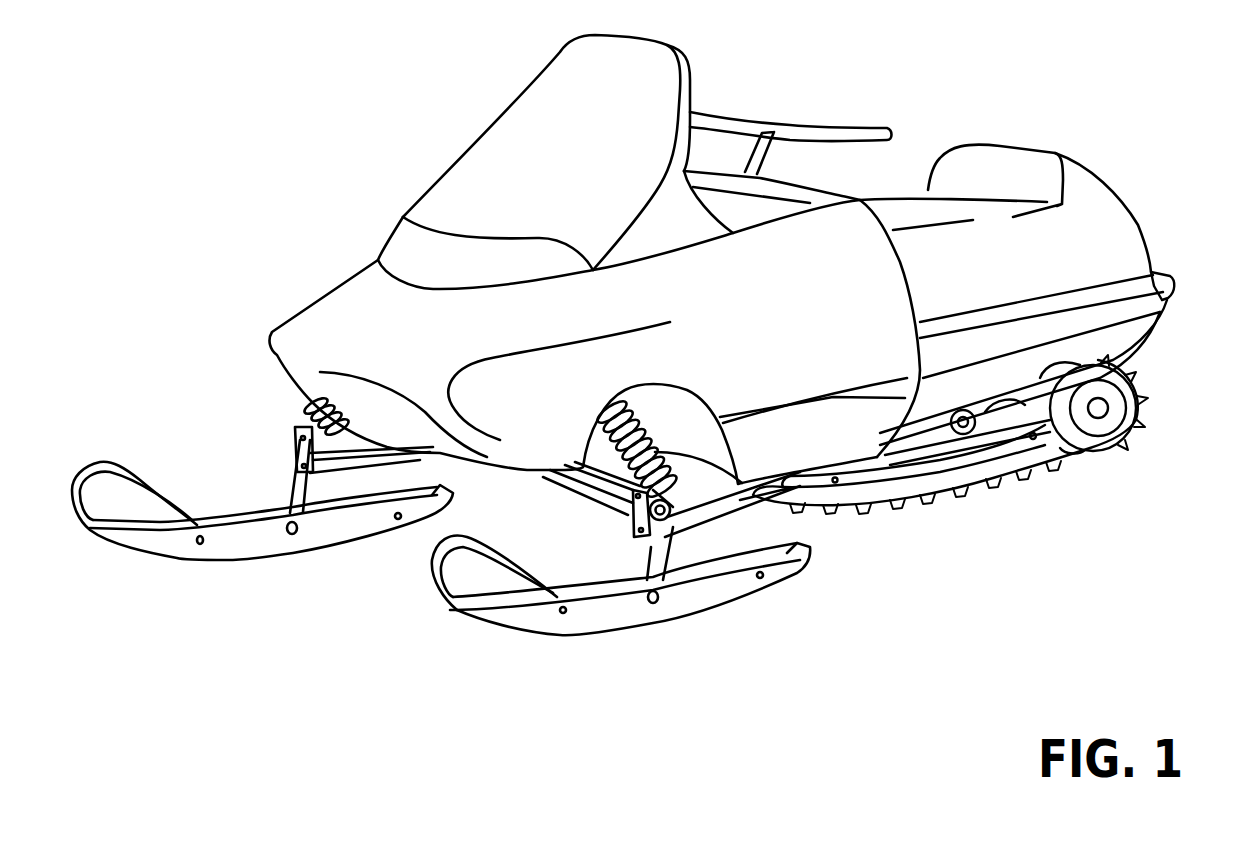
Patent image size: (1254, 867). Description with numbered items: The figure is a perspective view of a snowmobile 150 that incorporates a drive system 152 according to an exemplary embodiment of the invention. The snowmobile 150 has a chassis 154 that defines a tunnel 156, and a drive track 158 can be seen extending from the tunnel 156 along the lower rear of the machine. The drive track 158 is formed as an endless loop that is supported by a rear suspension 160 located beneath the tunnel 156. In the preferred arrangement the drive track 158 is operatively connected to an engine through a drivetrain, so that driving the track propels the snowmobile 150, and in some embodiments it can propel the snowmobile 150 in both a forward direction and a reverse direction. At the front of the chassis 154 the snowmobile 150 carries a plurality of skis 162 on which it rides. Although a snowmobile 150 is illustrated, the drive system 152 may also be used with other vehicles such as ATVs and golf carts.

The snowmobile 150 is at (662, 357).
The drive system 152 is at (827, 528).
The chassis 154 is at (1160, 322).
The tunnel 156 is at (1134, 342).
The drive track 158 is at (1063, 477).
The rear suspension 160 is at (905, 472).
The skis 162 is at (637, 623).